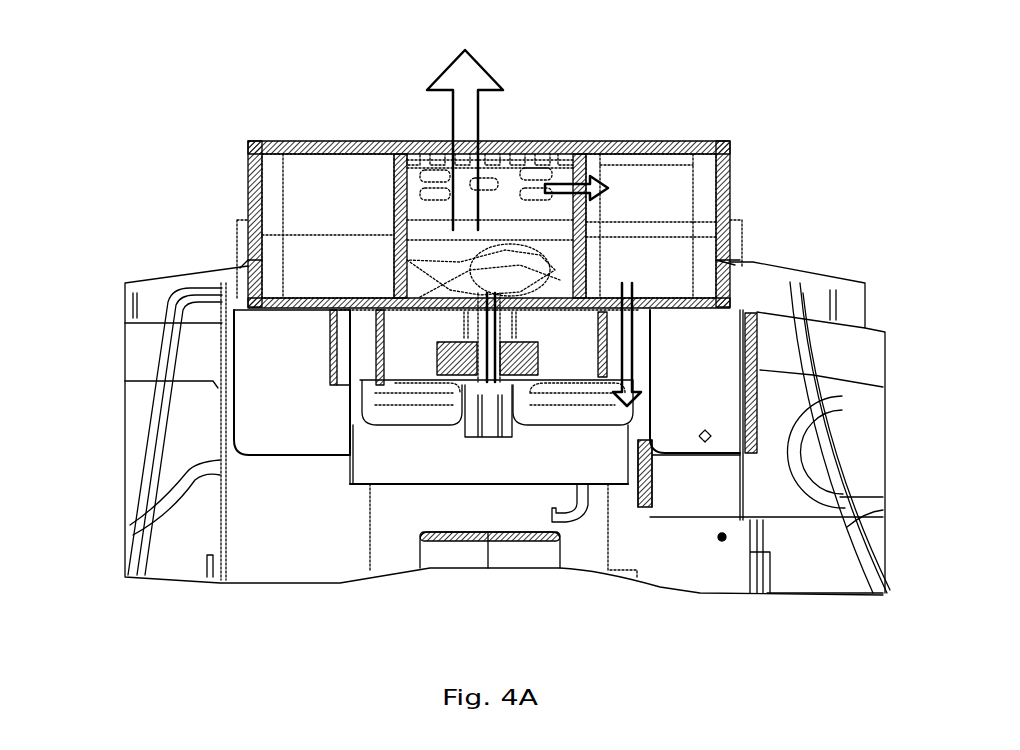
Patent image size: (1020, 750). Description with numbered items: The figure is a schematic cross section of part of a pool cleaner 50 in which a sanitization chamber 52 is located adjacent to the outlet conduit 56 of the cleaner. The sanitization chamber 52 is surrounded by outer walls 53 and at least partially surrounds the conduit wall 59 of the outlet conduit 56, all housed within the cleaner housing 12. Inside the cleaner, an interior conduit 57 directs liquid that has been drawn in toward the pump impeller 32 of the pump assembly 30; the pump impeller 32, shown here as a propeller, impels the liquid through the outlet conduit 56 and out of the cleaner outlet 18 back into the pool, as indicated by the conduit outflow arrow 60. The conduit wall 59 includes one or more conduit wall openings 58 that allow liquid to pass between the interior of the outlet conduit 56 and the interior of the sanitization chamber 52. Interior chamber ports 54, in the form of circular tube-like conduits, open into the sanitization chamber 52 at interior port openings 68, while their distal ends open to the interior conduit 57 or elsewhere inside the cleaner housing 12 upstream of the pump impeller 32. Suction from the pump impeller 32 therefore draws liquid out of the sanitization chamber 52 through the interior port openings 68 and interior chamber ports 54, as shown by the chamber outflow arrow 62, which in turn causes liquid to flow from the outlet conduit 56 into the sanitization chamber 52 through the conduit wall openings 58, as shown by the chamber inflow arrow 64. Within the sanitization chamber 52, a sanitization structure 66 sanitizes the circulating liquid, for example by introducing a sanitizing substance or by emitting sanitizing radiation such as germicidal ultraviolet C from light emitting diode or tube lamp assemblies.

The cleaner housing 12 is at (165, 283).
The cleaner outlet 18 is at (412, 152).
The pump assembly 30 is at (437, 398).
The pump impeller 32 is at (428, 265).
The pool cleaner 50 is at (130, 162).
The sanitization chamber 52 is at (307, 180).
The outer walls 53 is at (728, 182).
The interior chamber ports 54 is at (357, 352).
The outlet conduit 56 is at (420, 203).
The interior conduit 57 is at (350, 462).
The conduit wall openings 58 is at (397, 187).
The conduit wall 59 is at (367, 187).
The conduit outflow arrow 60 is at (478, 118).
The chamber outflow arrow 62 is at (634, 343).
The chamber inflow arrow 64 is at (620, 190).
The sanitization structure 66 is at (707, 173).
The interior port openings 68 is at (343, 303).